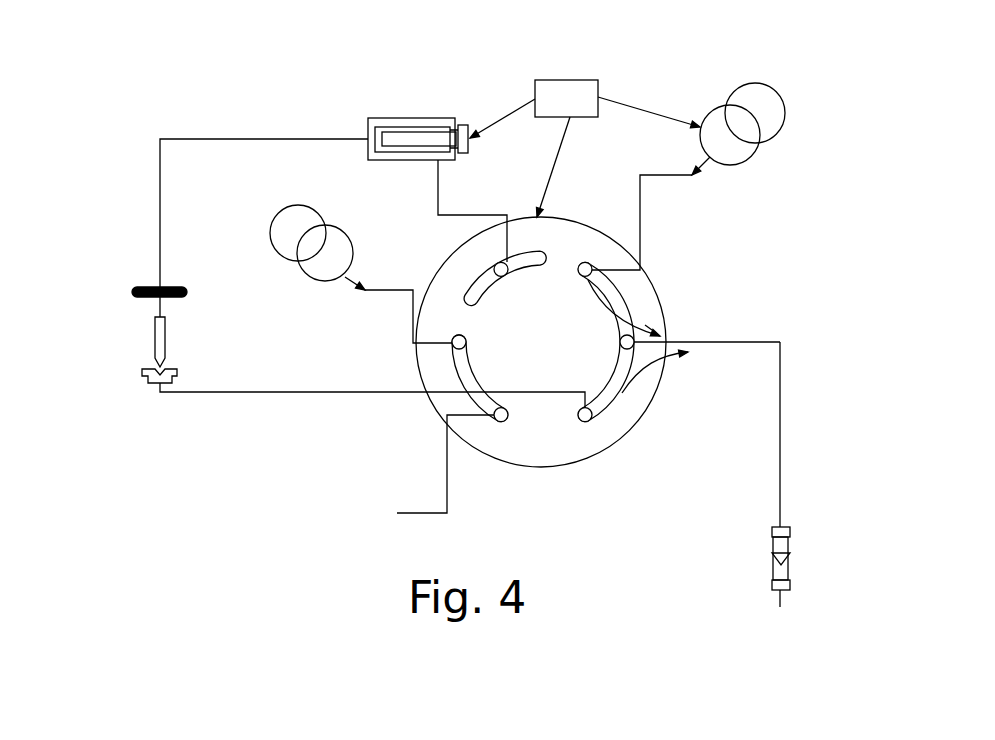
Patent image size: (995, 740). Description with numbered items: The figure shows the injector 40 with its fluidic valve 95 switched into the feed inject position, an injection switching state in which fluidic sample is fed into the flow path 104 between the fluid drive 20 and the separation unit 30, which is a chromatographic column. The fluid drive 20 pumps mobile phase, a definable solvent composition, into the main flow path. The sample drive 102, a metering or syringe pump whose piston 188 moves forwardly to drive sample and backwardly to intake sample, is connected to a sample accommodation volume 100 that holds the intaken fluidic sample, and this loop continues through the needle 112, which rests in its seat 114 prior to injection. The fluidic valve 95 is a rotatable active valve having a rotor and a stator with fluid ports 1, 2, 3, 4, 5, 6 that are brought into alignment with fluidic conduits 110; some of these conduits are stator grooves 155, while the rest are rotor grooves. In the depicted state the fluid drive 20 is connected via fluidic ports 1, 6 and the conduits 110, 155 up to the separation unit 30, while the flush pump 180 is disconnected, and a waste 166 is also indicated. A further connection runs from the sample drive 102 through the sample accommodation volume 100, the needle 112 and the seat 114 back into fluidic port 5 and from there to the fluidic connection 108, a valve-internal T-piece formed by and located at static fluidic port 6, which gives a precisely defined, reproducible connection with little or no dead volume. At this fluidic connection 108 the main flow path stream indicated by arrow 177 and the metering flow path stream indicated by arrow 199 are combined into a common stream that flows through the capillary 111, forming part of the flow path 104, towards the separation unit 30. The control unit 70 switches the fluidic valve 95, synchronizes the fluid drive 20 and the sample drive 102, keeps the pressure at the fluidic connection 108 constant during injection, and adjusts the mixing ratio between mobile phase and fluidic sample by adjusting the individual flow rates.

The injector 40 is at (137, 190).
The sample accommodation volume 100 is at (163, 285).
The needle 112 is at (153, 333).
The seat 114 is at (140, 370).
The piston 188 is at (412, 125).
The sample drive 102 is at (437, 118).
The control unit 70 is at (570, 80).
The fluid drive 20 is at (788, 113).
The flow path 104 is at (640, 200).
The capillary 111 is at (740, 342).
The flush pump 180 is at (295, 212).
The waste 166 is at (423, 510).
The fluidic valve 95 is at (567, 217).
The stator grooves 155 is at (470, 282).
The fluidic conduits 110 is at (620, 316).
The fluid port 1 is at (599, 259).
The fluid port 2 is at (497, 253).
The fluid port 3 is at (448, 332).
The fluid port 4 is at (492, 428).
The fluid port 5 is at (590, 428).
The fluid port 6 is at (635, 352).
The arrow 177 is at (640, 318).
The fluidic connection 108 is at (650, 323).
The arrow 199 is at (657, 373).
The separation unit 30 is at (788, 542).